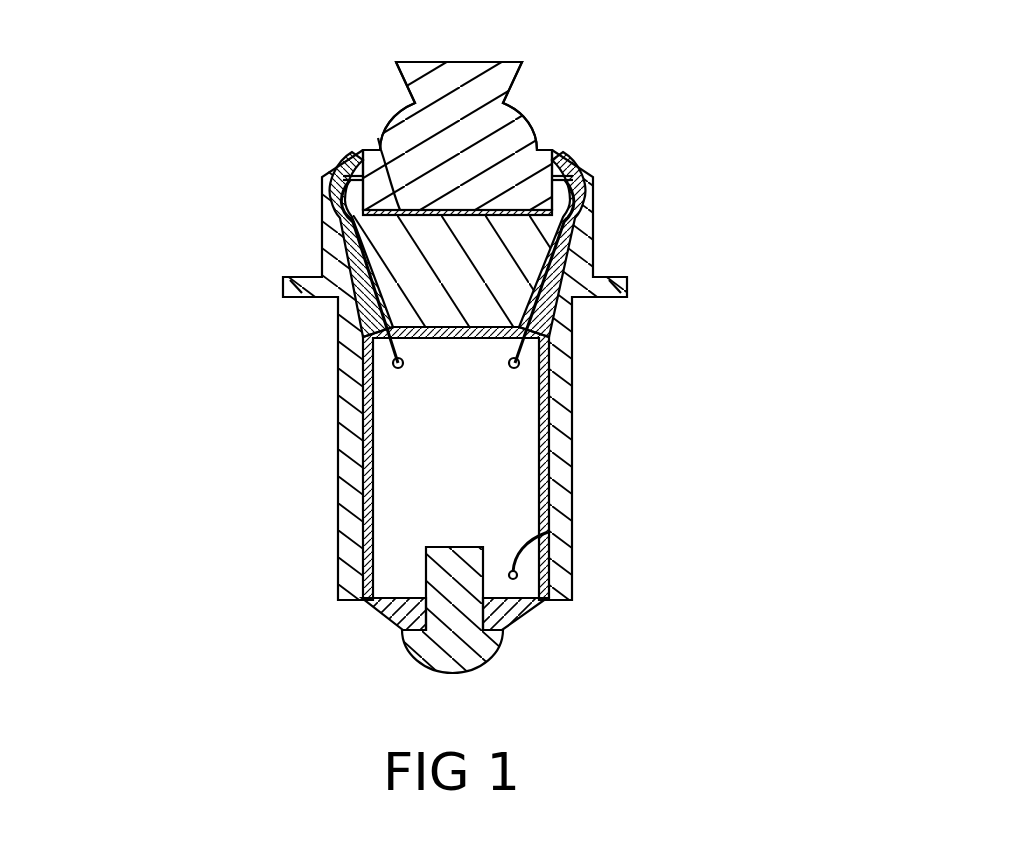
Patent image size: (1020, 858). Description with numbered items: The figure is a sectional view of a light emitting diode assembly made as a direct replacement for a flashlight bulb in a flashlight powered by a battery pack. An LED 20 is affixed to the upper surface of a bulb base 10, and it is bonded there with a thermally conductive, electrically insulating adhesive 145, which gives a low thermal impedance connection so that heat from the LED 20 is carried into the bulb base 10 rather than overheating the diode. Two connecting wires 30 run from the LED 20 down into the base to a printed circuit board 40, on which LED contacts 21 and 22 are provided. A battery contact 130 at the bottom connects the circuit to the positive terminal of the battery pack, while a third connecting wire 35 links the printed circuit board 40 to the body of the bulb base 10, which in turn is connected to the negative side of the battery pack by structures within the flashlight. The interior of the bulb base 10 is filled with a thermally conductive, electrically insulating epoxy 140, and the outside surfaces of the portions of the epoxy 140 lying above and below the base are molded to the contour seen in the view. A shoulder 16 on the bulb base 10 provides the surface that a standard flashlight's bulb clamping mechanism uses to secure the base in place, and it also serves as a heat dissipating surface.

The bulb base 10 is at (507, 268).
The shoulder 16 is at (285, 293).
The LED 20 is at (530, 165).
The LED contact 21 is at (392, 368).
The LED contact 22 is at (519, 363).
The connecting wires 30 is at (322, 202).
The third connecting wire 35 is at (545, 560).
The printed circuit board 40 is at (513, 433).
The battery contact 130 is at (458, 657).
The epoxy 140 is at (520, 610).
The adhesive 145 is at (378, 138).